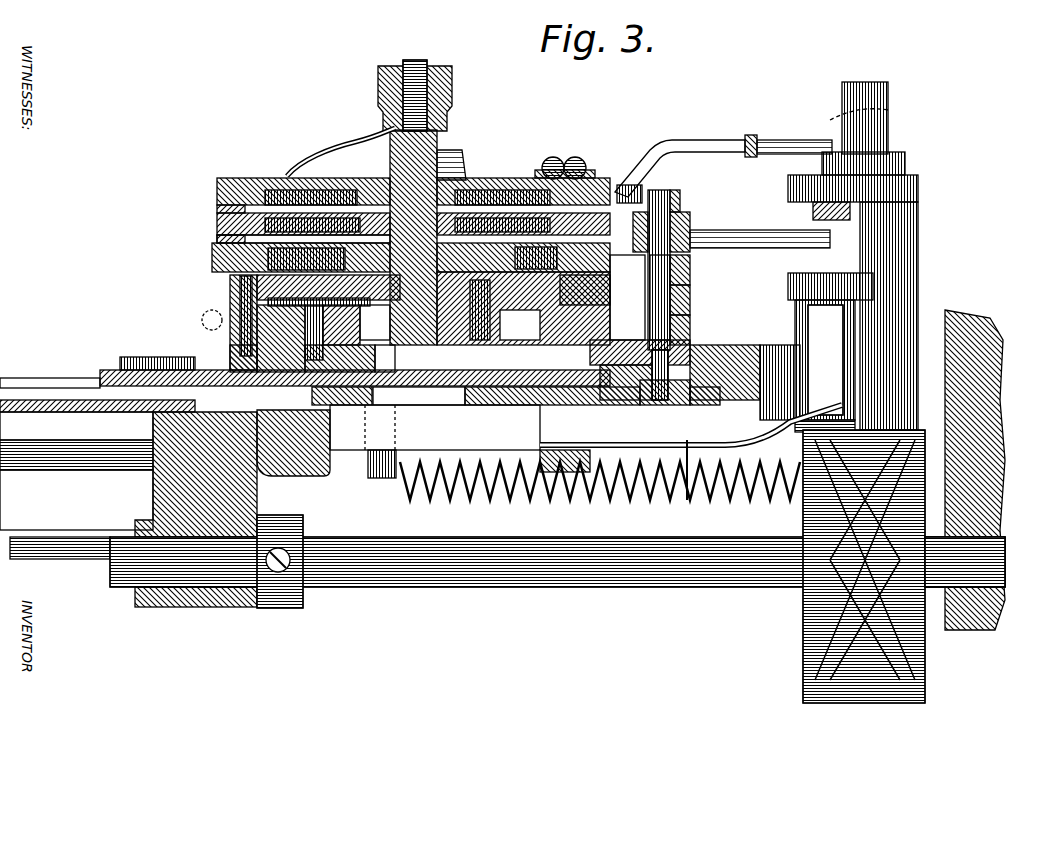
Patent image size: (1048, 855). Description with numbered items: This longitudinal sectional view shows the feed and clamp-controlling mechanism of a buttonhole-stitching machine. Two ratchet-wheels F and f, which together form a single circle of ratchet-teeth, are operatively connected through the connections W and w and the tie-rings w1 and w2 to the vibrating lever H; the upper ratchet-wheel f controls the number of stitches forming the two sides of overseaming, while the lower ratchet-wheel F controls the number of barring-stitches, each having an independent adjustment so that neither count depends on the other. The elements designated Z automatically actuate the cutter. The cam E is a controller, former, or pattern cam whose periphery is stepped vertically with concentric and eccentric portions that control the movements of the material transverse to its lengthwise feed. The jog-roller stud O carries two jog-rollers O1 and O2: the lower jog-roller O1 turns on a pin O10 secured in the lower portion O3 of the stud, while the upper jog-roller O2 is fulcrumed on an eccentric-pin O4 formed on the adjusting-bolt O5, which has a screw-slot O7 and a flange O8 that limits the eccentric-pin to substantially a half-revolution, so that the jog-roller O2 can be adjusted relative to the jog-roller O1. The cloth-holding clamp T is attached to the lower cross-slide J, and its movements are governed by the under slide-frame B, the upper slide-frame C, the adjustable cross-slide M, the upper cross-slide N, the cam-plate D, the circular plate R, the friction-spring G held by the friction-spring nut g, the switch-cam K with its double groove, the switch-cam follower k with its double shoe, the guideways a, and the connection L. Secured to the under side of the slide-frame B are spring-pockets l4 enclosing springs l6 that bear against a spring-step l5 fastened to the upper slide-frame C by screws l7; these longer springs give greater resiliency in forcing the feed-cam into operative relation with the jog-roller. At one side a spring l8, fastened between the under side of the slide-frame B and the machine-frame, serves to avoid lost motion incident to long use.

The friction-spring nut g is at (378, 86).
The friction-spring G is at (345, 142).
The upper ratchet-wheel f is at (217, 180).
The tie-ring w2 is at (217, 207).
The lower ratchet-wheel F is at (217, 219).
The tie-ring w1 is at (217, 239).
The cam E is at (212, 258).
The upper cross-slide N is at (240, 285).
The cam-plate D is at (230, 297).
The upper slide-frame C is at (230, 352).
The adjustable cross-slide M is at (375, 322).
The lower cross-slide J is at (385, 358).
The flange O8 is at (635, 190).
The screw-slot O7 is at (660, 200).
The adjusting-bolt O5 is at (680, 200).
The eccentric-pin O4 is at (640, 245).
The upper jog-roller O2 is at (688, 232).
The lower jog-roller O1 is at (690, 268).
The jog-roller stud O is at (690, 296).
The lower portion of jog-roller stud O3 is at (690, 313).
The pin O10 is at (650, 300).
The circular plate R is at (680, 142).
The connection W is at (775, 137).
The connection w is at (758, 240).
The cutter-actuating elements Z is at (880, 130).
The vibrating lever H is at (908, 242).
The screws l7 is at (745, 350).
The spring-step l5 is at (790, 345).
The switch-cam follower k is at (845, 432).
The cloth-holding clamp T is at (60, 380).
The under slide-frame B is at (312, 395).
The guideways a is at (333, 455).
The spring-pockets l4 is at (435, 427).
The springs l6 is at (750, 470).
The spring l8 is at (584, 488).
The connection L is at (687, 500).
The switch-cam K is at (925, 650).